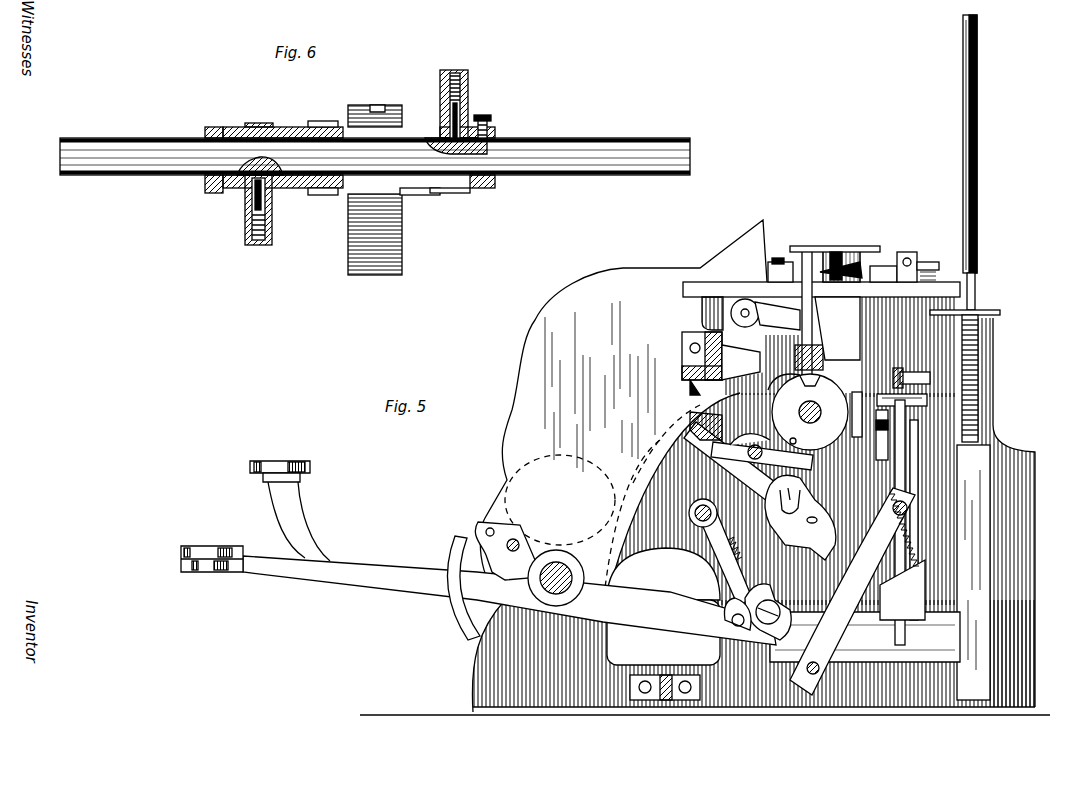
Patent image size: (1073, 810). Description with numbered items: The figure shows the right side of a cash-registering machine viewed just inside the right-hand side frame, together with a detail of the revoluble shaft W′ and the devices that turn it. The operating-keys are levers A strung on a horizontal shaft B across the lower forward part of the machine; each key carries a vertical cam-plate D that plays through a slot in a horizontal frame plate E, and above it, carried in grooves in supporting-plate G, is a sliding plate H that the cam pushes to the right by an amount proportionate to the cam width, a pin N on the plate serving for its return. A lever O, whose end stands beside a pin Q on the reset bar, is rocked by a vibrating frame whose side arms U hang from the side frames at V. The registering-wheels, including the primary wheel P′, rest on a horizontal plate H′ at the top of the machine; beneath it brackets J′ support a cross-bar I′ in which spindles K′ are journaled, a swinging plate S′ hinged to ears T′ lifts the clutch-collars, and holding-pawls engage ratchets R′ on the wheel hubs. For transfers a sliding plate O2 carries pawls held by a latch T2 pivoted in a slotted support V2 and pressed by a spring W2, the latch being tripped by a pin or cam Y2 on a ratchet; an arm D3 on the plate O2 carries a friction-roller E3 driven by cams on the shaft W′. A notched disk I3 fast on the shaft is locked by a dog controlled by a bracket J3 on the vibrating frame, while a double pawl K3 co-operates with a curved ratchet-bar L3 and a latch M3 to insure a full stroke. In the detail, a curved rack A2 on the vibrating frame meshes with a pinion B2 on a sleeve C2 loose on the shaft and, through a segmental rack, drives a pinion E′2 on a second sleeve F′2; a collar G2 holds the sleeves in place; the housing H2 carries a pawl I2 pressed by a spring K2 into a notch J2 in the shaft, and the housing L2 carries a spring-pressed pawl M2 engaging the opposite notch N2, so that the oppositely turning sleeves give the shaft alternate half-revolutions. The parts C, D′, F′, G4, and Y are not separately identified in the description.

In FIG. 5, the key-lever A is at (368, 570).
In FIG. 5, the horizontal shaft B is at (556, 560).
In FIG. 5, the vertical rod C is at (987, 162).
In FIG. 5, the vertical cam-plate D is at (930, 484).
In FIG. 5, the plate D′ is at (985, 312).
In FIG. 5, the arm D3 is at (760, 313).
In FIG. 5, the horizontal plate E is at (928, 400).
In FIG. 5, the friction-roller E3 is at (758, 360).
In FIG. 5, the bar F′ is at (852, 412).
In FIG. 5, the supporting-plate G is at (980, 350).
In FIG. 5, the sliding plate H is at (932, 378).
In FIG. 5, the horizontal plate H′ is at (715, 282).
In FIG. 5, the cross-bar I′ is at (882, 462).
In FIG. 5, the notched disk I3 is at (797, 433).
In FIG. 5, the bracket J′ is at (845, 300).
In FIG. 5, the bracket J3 is at (686, 432).
In FIG. 5, the spindle K′ is at (765, 640).
In FIG. 5, the double pawl K3 is at (778, 612).
In FIG. 5, the curved ratchet-bar L3 is at (825, 630).
In FIG. 5, the latch M3 is at (770, 625).
In FIG. 5, the pin N is at (900, 600).
In FIG. 5, the lever O is at (848, 505).
In FIG. 5, the sliding plate O2 is at (778, 262).
In FIG. 5, the primary registering-wheel P′ is at (830, 250).
In FIG. 5, the pin Q is at (810, 412).
In FIG. 5, the ratchet R′ is at (828, 262).
In FIG. 5, the swinging plate S′ is at (815, 345).
In FIG. 5, the ear T′ is at (700, 317).
In FIG. 5, the latch T2 is at (880, 268).
In FIG. 5, the side arm U is at (720, 552).
In FIG. 5, the pivot V is at (770, 395).
In FIG. 5, the slotted support V2 is at (912, 254).
In FIG. 6, the revoluble shaft W′ is at (130, 132).
In FIG. 5, the revoluble shaft W′ is at (799, 409).
In FIG. 5, the spring W2 is at (935, 262).
In FIG. 5, the stop Y is at (690, 387).
In FIG. 5, the pin or cam Y2 is at (855, 268).
In FIG. 6, the curved rack A2 is at (402, 253).
In FIG. 6, the pinion B2 is at (410, 196).
In FIG. 6, the sleeve C2 is at (445, 194).
In FIG. 6, the pinion E′2 is at (327, 196).
In FIG. 6, the sleeve F′2 is at (278, 124).
In FIG. 6, the collar G2 is at (492, 124).
In FIG. 6, the collar G4 is at (218, 126).
In FIG. 6, the housing H2 is at (468, 72).
In FIG. 6, the pawl I2 is at (468, 110).
In FIG. 6, the notch J2 is at (490, 154).
In FIG. 6, the spring K2 is at (458, 70).
In FIG. 6, the housing L2 is at (250, 230).
In FIG. 6, the pawl M2 is at (250, 195).
In FIG. 6, the notch N2 is at (290, 160).